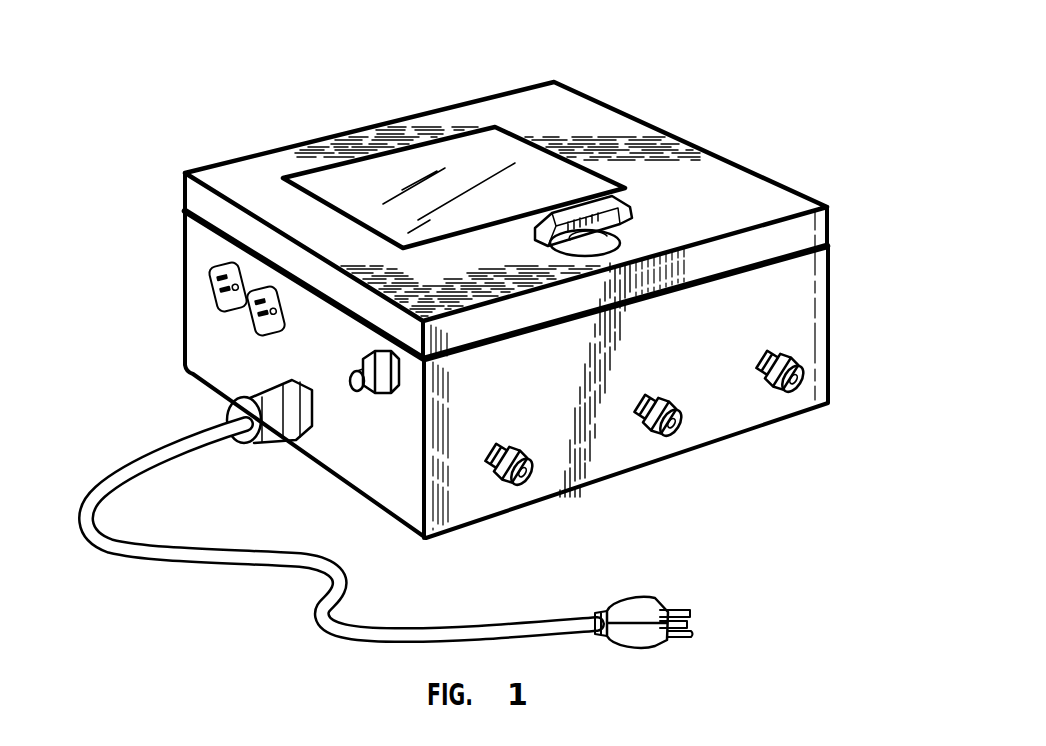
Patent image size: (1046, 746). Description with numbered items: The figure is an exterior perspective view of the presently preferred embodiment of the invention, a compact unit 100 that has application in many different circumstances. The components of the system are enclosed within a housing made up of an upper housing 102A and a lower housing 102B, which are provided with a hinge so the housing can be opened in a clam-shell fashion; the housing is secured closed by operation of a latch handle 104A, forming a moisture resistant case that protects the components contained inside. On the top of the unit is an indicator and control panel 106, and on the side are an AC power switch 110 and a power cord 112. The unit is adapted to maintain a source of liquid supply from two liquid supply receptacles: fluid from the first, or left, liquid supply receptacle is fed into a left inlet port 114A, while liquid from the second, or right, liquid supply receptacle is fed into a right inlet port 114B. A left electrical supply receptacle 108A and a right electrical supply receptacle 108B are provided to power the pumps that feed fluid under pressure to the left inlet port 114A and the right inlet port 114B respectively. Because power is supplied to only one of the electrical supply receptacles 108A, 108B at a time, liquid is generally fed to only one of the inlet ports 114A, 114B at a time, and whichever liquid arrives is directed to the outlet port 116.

The compact unit 100 is at (680, 94).
The upper housing 102A is at (763, 197).
The lower housing 102B is at (782, 303).
The latch handle 104A is at (633, 217).
The indicator and control panel 106 is at (463, 165).
The left electrical supply receptacle 108A is at (236, 348).
The right electrical supply receptacle 108B is at (197, 298).
The AC power switch 110 is at (352, 390).
The power cord 112 is at (641, 587).
The left inlet port 114A is at (535, 470).
The right inlet port 114B is at (797, 388).
The outlet port 116 is at (683, 427).